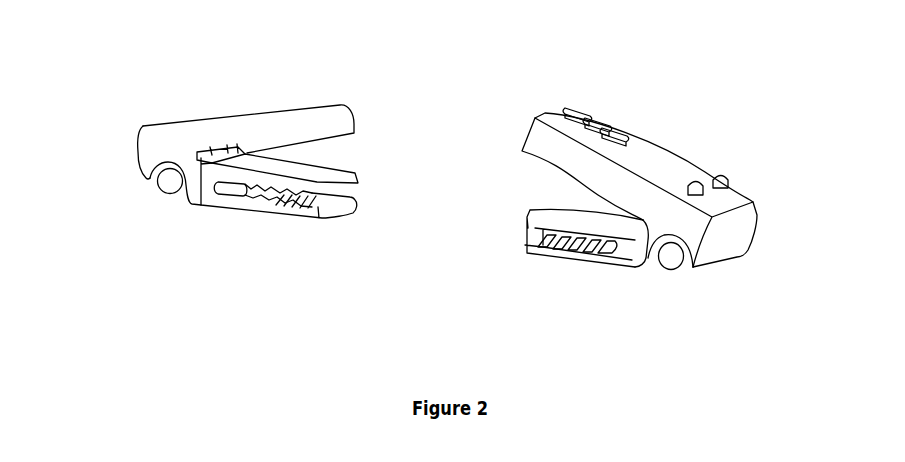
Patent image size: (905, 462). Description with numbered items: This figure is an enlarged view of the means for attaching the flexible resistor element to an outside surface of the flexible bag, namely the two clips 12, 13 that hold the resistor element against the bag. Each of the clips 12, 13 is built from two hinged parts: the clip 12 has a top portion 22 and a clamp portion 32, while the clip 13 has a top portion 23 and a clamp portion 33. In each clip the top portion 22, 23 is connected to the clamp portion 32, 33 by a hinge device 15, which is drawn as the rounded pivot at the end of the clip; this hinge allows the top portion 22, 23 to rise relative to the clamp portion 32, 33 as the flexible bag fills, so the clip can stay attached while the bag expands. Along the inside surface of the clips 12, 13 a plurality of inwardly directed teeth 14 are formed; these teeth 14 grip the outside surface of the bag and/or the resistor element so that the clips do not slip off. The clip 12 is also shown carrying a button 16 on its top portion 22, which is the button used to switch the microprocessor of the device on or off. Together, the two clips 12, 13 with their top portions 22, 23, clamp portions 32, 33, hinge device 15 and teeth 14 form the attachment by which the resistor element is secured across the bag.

The clip 12 is at (674, 199).
The clip 13 is at (138, 138).
The inwardly directed teeth 14 is at (297, 207).
The hinge device 15 is at (671, 270).
The button 16 is at (603, 117).
The top portion 22 is at (533, 140).
The top portion 23 is at (248, 127).
The clamp portion 32 is at (627, 248).
The clamp portion 33 is at (204, 187).